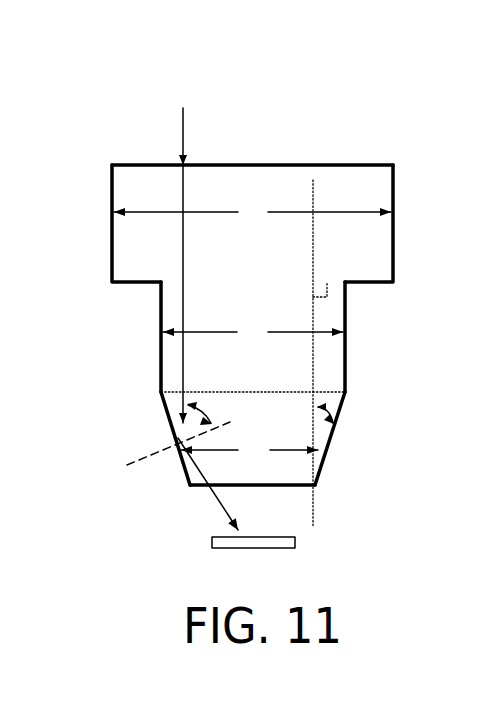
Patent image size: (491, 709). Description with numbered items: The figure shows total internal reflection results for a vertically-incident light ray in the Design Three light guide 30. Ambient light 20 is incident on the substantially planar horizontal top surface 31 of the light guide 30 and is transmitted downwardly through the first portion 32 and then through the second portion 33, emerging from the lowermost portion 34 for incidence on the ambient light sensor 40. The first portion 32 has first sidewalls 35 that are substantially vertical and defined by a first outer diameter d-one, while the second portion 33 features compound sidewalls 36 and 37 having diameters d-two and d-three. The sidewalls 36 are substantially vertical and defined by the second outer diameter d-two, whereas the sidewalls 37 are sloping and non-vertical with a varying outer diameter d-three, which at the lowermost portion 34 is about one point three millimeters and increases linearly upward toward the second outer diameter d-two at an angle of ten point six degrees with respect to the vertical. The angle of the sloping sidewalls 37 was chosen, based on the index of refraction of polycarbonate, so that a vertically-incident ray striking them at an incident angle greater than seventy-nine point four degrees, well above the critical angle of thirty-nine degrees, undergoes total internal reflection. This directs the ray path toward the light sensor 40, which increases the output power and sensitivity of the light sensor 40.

The ambient light 20 is at (184, 253).
The light guide 30 is at (397, 130).
The top surface 31 is at (314, 165).
The first portion 32 is at (135, 242).
The second portion 33 is at (177, 368).
The lowermost portion 34 is at (285, 487).
The first sidewalls 35 is at (112, 193).
The sidewalls 36 is at (160, 312).
The sidewalls 37 is at (173, 424).
The ambient light sensor 40 is at (212, 540).